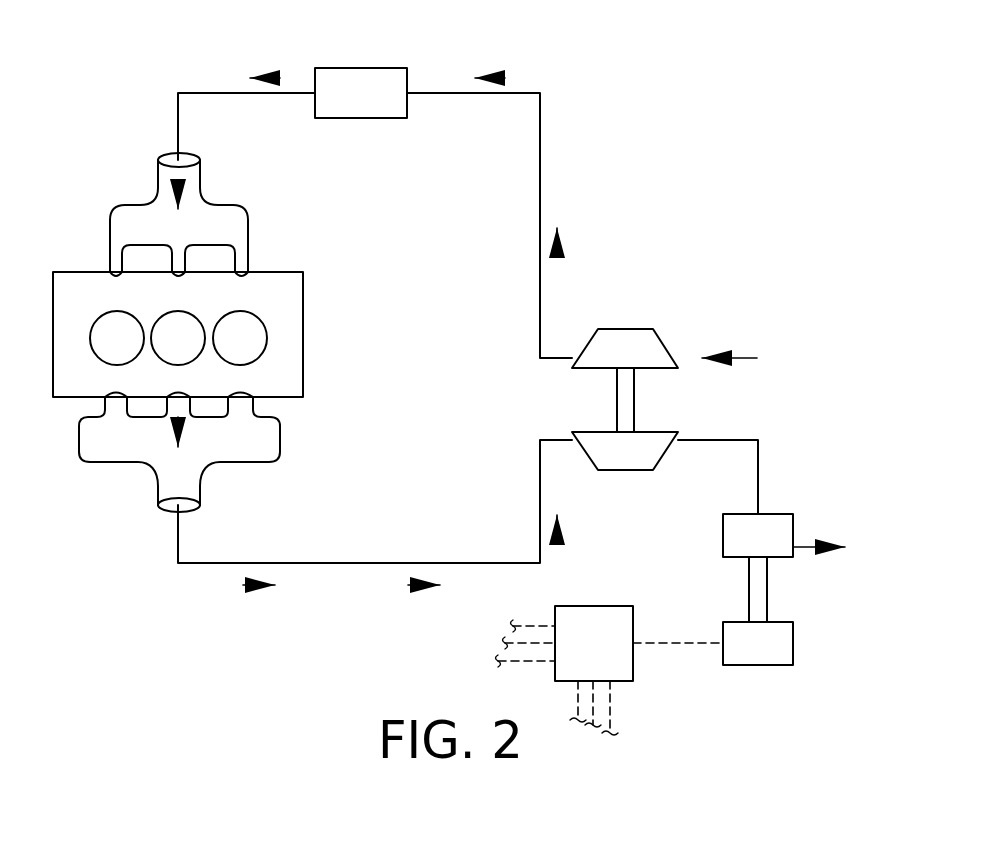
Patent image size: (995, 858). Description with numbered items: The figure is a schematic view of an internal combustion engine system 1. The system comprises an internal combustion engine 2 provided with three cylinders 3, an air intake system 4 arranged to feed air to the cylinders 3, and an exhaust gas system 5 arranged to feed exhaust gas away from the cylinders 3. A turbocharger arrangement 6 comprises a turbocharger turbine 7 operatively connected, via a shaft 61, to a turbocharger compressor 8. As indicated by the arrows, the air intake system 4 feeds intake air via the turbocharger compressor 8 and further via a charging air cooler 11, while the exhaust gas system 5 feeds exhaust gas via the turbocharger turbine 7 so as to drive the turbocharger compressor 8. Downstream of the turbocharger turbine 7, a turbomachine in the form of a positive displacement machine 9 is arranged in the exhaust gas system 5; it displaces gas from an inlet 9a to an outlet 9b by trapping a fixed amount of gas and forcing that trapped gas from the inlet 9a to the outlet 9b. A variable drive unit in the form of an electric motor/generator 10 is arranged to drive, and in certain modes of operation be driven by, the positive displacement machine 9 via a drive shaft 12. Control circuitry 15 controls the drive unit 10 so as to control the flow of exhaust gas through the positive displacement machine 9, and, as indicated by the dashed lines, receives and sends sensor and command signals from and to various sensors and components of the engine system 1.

The internal combustion engine system 1 is at (641, 80).
The internal combustion engine 2 is at (96, 140).
The cylinders 3 is at (117, 338).
The air intake system 4 is at (113, 212).
The exhaust gas system 5 is at (360, 563).
The turbocharger arrangement 6 is at (682, 401).
The turbocharger turbine 7 is at (625, 450).
The turbocharger compressor 8 is at (625, 350).
The shaft 61 is at (617, 402).
The positive displacement machine 9 is at (778, 498).
The inlet 9a is at (758, 514).
The outlet 9b is at (793, 547).
The electric motor/generator 10 is at (760, 645).
The charging air cooler 11 is at (362, 92).
The drive shaft 12 is at (749, 592).
The control circuitry 15 is at (633, 662).